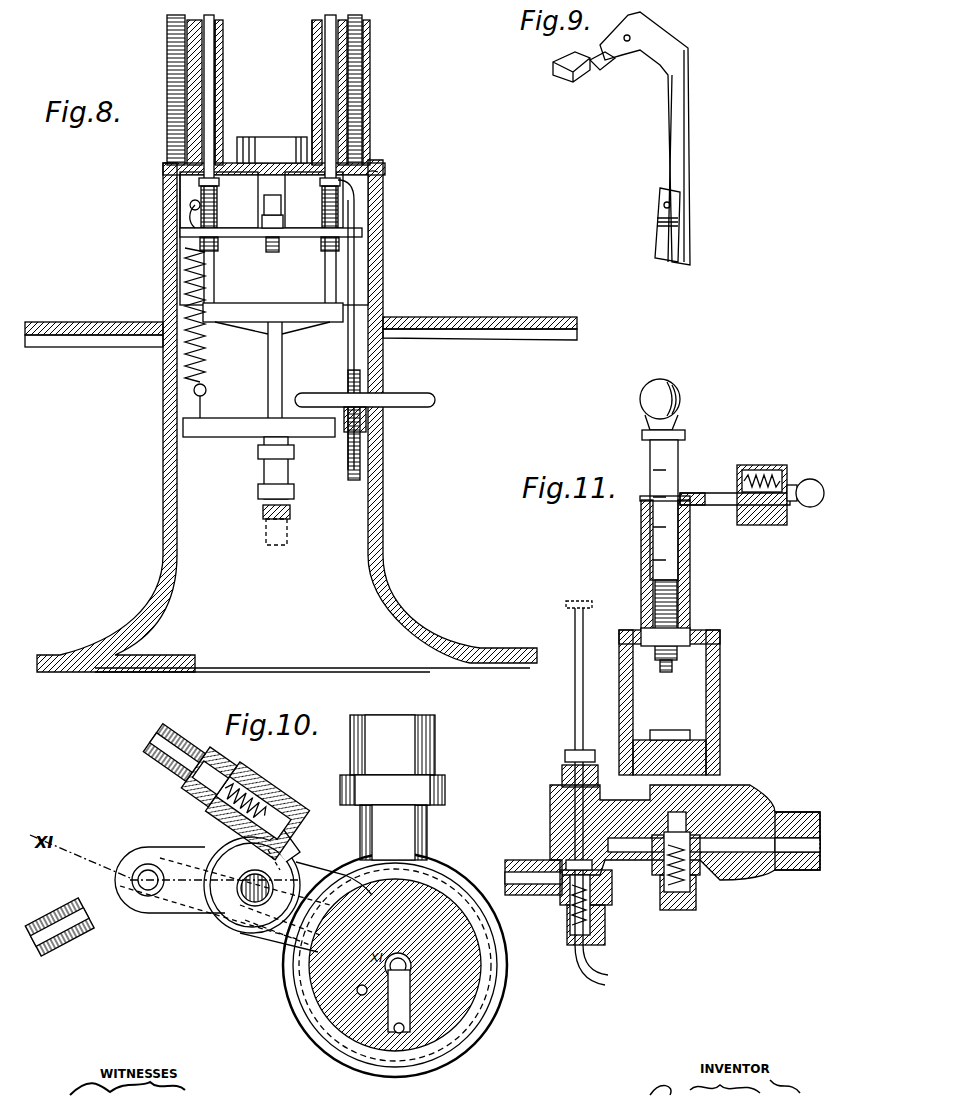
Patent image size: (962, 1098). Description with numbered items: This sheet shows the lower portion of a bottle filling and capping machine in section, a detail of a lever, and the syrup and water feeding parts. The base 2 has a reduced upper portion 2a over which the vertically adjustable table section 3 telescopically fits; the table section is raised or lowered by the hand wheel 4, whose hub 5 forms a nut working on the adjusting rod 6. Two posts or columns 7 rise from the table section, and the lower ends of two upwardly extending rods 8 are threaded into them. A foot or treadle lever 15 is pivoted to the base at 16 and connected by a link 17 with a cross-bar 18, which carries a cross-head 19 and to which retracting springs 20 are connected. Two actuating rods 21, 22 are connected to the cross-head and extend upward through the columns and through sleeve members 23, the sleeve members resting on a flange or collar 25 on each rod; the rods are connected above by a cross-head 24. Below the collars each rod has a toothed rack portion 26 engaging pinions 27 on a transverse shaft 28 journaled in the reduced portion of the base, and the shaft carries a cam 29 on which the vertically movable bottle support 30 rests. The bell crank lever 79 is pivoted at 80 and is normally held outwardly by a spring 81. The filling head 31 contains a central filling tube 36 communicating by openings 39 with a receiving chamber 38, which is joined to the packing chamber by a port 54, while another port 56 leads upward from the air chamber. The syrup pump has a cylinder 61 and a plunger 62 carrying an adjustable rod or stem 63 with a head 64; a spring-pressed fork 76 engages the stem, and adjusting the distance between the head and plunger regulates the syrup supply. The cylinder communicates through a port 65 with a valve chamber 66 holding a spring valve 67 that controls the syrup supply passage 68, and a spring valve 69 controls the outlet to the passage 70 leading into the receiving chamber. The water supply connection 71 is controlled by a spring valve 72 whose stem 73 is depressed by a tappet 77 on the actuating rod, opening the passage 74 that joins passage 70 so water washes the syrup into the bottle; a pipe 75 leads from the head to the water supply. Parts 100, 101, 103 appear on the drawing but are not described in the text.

In FIG. 8, the base 2 is at (167, 508).
In FIG. 8, the reduced upper portion 2a is at (384, 277).
In FIG. 8, the table section 3 is at (384, 250).
In FIG. 8, the hand wheel 4 is at (405, 394).
In FIG. 8, the hub 5 is at (349, 393).
In FIG. 8, the adjusting rod 6 is at (383, 205).
In FIG. 8, the posts or columns 7 is at (176, 134).
In FIG. 8, the rods 8 is at (170, 22).
In FIG. 8, the foot or treadle lever 15 is at (263, 510).
In FIG. 8, the pivot 16 is at (266, 532).
In FIG. 8, the link 17 is at (264, 474).
In FIG. 8, the cross-bar 18 is at (235, 432).
In FIG. 8, the cross-head 19 is at (246, 312).
In FIG. 8, the retracting springs 20 is at (217, 356).
In FIG. 8, the actuating rod 21 is at (215, 50).
In FIG. 8, the actuating rod 22 is at (322, 50).
In FIG. 8, the sleeve members 23 is at (218, 64).
In FIG. 11, the cross-head 24 is at (762, 525).
In FIG. 8, the flange or collar 25 is at (215, 184).
In FIG. 8, the toothed rack portion 26 is at (217, 206).
In FIG. 8, the pinions 27 is at (217, 244).
In FIG. 8, the transverse shaft 28 is at (288, 238).
In FIG. 8, the cam 29 is at (275, 252).
In FIG. 8, the bottle support 30 is at (265, 147).
In FIG. 10, the filling head 31 is at (395, 965).
In FIG. 10, the filling tube 36 is at (480, 952).
In FIG. 10, the receiving chamber 38 is at (410, 980).
In FIG. 10, the openings 39 is at (410, 968).
In FIG. 10, the port or passage 54 is at (399, 1033).
In FIG. 10, the port or passage 56 is at (357, 992).
In FIG. 11, the cylinder of syrup pump 61 is at (720, 710).
In FIG. 11, the plunger 62 is at (720, 690).
In FIG. 11, the rod or stem 63 is at (672, 580).
In FIG. 11, the head 64 is at (683, 399).
In FIG. 10, the head 64 is at (270, 878).
In FIG. 10, the port 65 is at (288, 838).
In FIG. 10, the valve chamber 66 is at (262, 772).
In FIG. 10, the spring valve 67 is at (243, 775).
In FIG. 10, the syrup supply passage 68 is at (165, 745).
In FIG. 11, the spring valve 69 is at (700, 860).
In FIG. 11, the passage 70 is at (778, 858).
In FIG. 10, the passage 70 is at (280, 941).
In FIG. 11, the supply connection 71 is at (518, 870).
In FIG. 10, the supply connection 71 is at (103, 878).
In FIG. 11, the spring valve 72 is at (600, 890).
In FIG. 11, the stem 73 is at (578, 705).
In FIG. 10, the stem 73 is at (160, 902).
In FIG. 11, the passage 74 is at (560, 838).
In FIG. 11, the pipe 75 is at (608, 970).
In FIG. 11, the spring-pressed fork 76 is at (710, 487).
In FIG. 11, the tappet 77 is at (579, 593).
In FIG. 9, the bell crank lever 79 is at (666, 140).
In FIG. 9, the pivot 80 is at (626, 42).
In FIG. 9, the spring 81 is at (660, 245).
In FIG. 10, the pipe 100 is at (392, 745).
In FIG. 10, the pipe 101 is at (393, 832).
In FIG. 10, the collar 103 is at (435, 798).